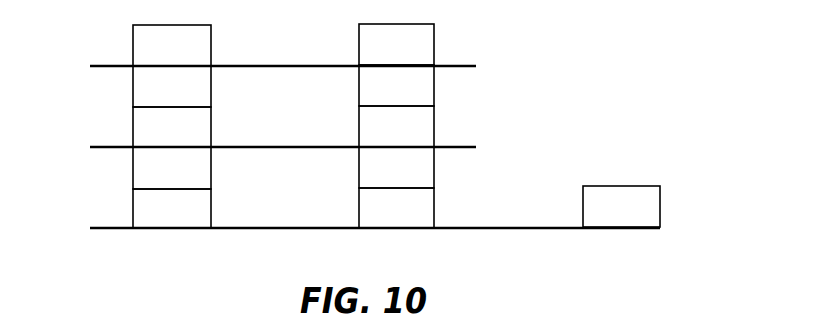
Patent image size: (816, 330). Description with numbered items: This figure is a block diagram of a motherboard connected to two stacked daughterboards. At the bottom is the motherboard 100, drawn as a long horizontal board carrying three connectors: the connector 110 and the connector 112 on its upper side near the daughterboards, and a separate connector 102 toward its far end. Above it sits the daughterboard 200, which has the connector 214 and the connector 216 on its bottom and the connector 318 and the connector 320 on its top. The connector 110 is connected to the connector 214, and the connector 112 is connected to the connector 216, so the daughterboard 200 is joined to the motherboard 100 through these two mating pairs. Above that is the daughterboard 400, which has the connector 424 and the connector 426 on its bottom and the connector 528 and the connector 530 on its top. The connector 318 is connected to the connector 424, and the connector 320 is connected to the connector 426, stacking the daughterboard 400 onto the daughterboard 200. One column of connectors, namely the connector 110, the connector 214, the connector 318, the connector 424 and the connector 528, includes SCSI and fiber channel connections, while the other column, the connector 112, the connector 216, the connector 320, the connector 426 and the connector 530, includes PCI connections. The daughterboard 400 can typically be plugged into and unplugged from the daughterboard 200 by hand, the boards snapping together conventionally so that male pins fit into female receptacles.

The motherboard 100 is at (525, 229).
The connector 102 is at (660, 193).
The connector 110 is at (359, 204).
The connector 112 is at (133, 203).
The daughterboard 200 is at (467, 146).
The connector 214 is at (359, 166).
The connector 216 is at (133, 163).
The connector 318 is at (359, 118).
The connector 320 is at (133, 116).
The daughterboard 400 is at (467, 65).
The connector 424 is at (359, 78).
The connector 426 is at (133, 76).
The connector 528 is at (359, 34).
The connector 530 is at (133, 33).